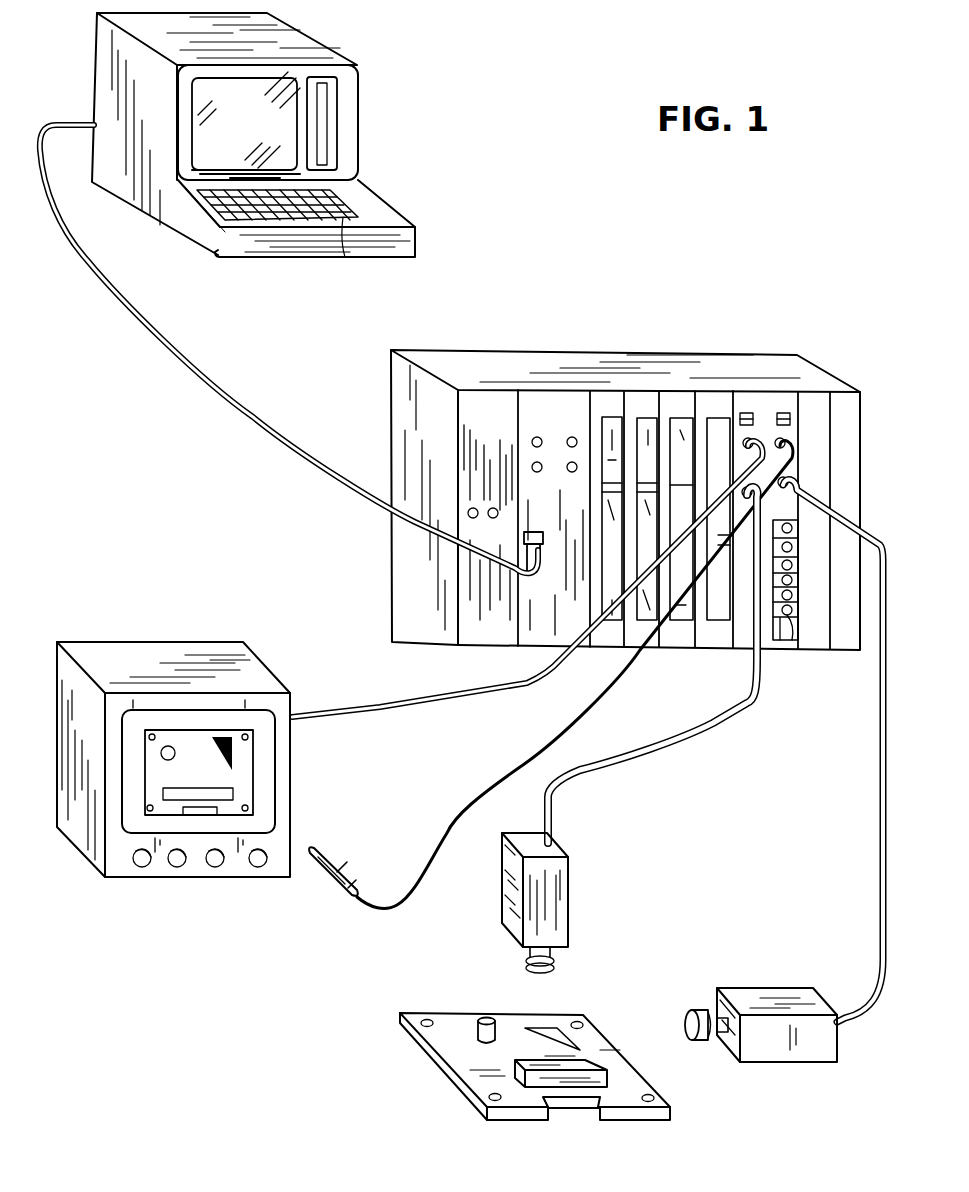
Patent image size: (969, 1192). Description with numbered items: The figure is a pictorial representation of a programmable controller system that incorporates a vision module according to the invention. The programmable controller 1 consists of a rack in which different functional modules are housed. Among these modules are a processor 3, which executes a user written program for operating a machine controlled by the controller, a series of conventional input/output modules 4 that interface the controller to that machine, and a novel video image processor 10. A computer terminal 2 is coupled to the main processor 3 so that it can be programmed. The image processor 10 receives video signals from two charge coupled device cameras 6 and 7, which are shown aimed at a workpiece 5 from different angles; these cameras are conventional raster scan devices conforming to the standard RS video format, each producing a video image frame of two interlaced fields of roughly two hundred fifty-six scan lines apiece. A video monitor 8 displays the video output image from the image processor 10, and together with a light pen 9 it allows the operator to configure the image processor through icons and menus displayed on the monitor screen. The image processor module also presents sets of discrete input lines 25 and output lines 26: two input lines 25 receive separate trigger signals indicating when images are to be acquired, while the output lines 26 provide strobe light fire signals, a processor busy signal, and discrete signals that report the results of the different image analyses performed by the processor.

The programmable controller 1 is at (622, 342).
The computer terminal 2 is at (366, 130).
The processor 3 is at (545, 632).
The input/output modules 4 is at (612, 650).
The workpiece 5 is at (597, 1038).
The charge coupled device camera 6 is at (562, 898).
The charge coupled device camera 7 is at (762, 1050).
The video monitor 8 is at (195, 870).
The light pen 9 is at (333, 873).
The video image processor 10 is at (765, 650).
The discrete input lines 25 is at (795, 649).
The discrete output lines 26 is at (817, 671).